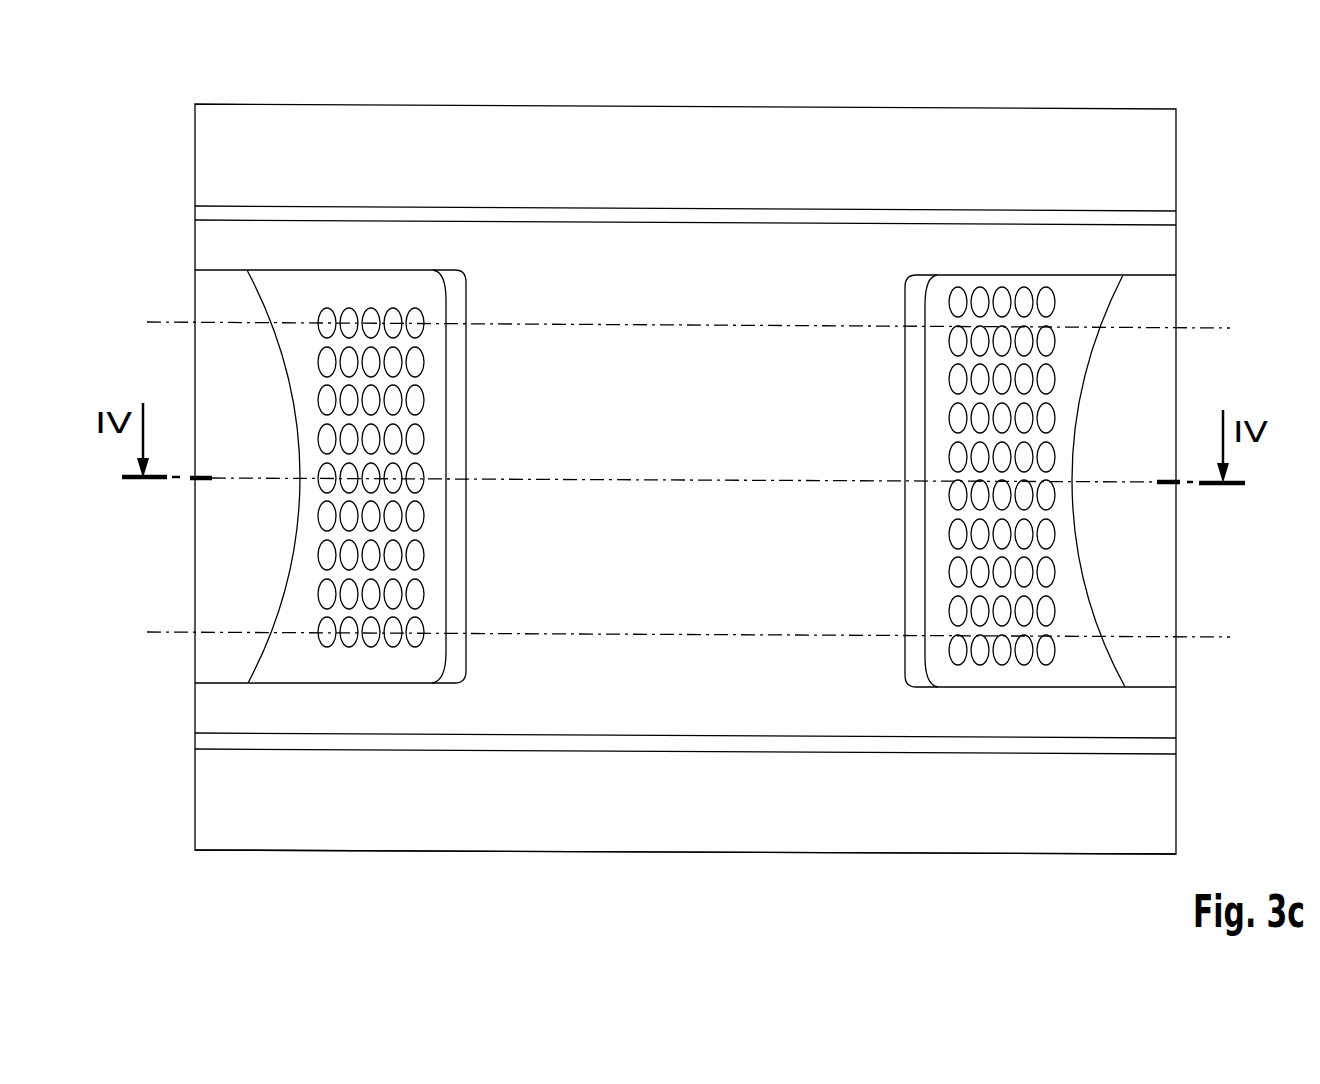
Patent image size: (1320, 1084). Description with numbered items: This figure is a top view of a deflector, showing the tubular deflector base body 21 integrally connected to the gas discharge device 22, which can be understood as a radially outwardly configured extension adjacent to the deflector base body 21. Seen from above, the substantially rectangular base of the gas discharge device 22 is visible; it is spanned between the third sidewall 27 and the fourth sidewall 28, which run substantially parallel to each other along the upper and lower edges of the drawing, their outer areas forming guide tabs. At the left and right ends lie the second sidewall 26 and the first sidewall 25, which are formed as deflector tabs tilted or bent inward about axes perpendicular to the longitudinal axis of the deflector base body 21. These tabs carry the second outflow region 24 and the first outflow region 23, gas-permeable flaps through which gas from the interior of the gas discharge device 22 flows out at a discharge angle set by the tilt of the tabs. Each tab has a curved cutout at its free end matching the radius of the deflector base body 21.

The deflector base body 21 is at (925, 832).
The gas discharge device 22 is at (1236, 176).
The first outflow region 23 is at (1035, 518).
The second outflow region 24 is at (342, 540).
The first sidewall 25 is at (1072, 372).
The second sidewall 26 is at (300, 372).
The third sidewall 27 is at (683, 717).
The fourth sidewall 28 is at (689, 247).